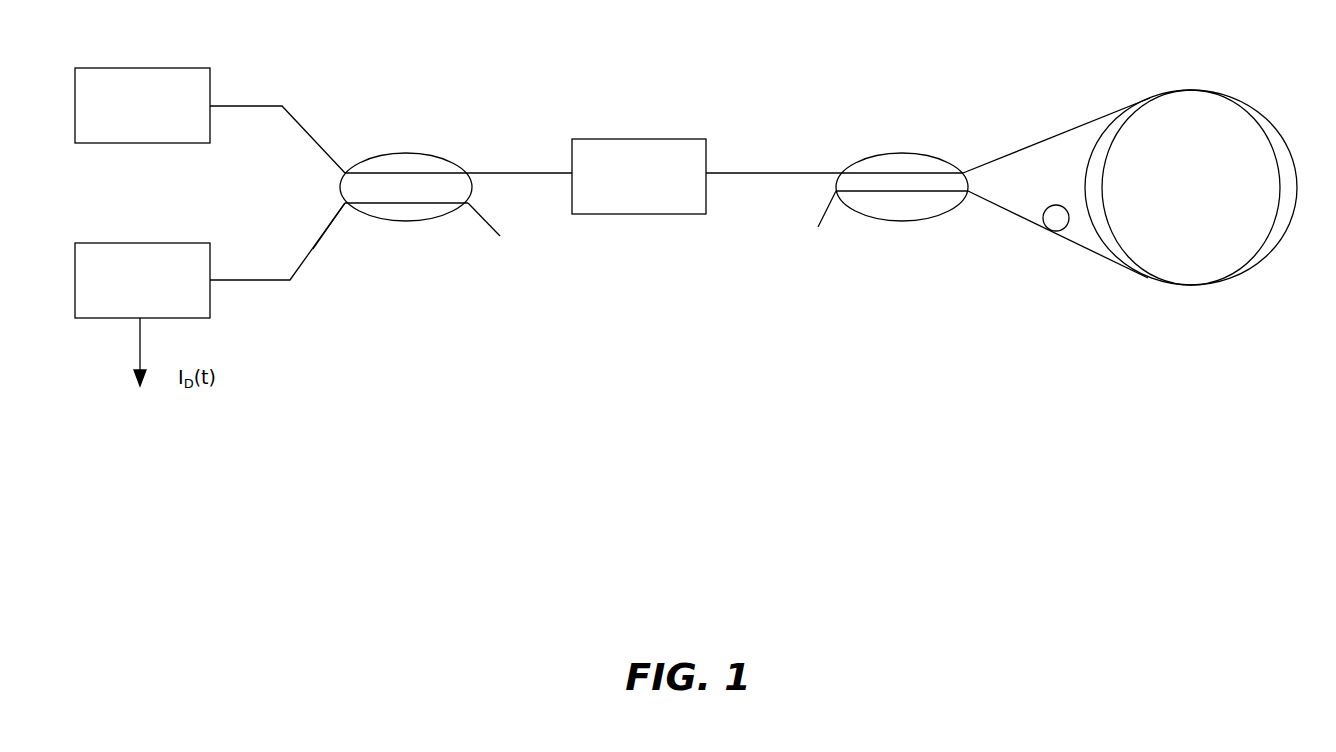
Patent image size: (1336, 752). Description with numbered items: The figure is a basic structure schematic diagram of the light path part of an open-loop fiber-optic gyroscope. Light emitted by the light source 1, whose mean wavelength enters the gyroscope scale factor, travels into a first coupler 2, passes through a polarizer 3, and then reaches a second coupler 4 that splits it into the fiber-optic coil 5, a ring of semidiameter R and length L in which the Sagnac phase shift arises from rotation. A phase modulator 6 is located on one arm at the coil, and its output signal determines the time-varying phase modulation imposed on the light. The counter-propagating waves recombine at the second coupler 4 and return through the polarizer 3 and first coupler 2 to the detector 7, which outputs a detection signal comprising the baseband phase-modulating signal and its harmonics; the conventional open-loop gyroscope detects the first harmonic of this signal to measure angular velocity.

The light source 1 is at (171, 68).
The coupler 2 is at (356, 164).
The polarizer 3 is at (657, 139).
The coupler 4 is at (848, 165).
The fiber-optic coil 5 is at (1201, 90).
The phase modulator 6 is at (1052, 231).
The detector 7 is at (158, 243).